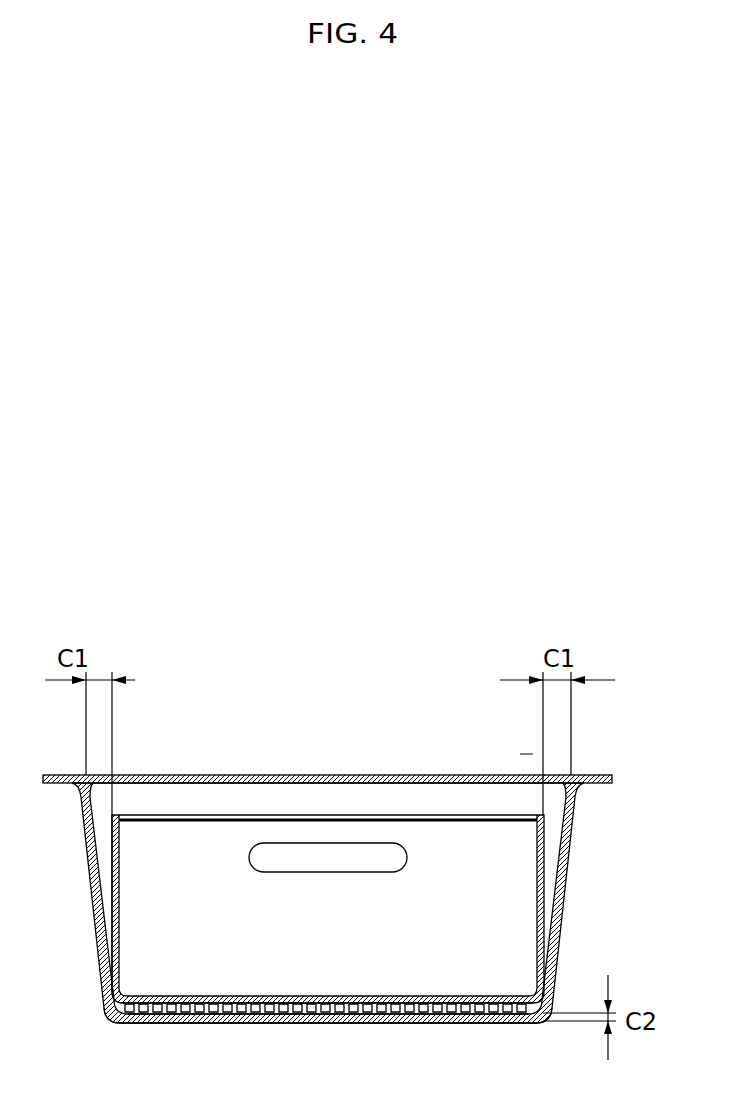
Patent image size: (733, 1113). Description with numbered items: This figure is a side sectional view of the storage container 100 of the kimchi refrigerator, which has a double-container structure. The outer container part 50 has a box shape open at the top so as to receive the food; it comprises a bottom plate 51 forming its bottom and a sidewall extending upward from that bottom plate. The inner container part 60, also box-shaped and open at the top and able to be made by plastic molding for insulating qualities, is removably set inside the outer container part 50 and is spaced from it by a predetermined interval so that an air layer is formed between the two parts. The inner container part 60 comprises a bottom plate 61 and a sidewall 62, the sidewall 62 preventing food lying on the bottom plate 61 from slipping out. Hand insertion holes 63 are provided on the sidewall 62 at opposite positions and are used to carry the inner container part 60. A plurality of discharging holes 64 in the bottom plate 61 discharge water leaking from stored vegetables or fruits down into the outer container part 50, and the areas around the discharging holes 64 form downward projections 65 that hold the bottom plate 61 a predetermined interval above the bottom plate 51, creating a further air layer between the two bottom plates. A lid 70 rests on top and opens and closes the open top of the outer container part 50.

The lid 70 is at (262, 776).
The hand insertion hole 63 is at (346, 858).
The inner container part 60 is at (546, 867).
The sidewall 62 is at (121, 918).
The outer container part 50 is at (564, 916).
The bottom plate 51 is at (293, 1024).
The bottom plate 61 is at (462, 1002).
The discharging holes 64 is at (353, 1002).
The downward projections 65 is at (428, 1024).
The storage container 100 is at (647, 862).